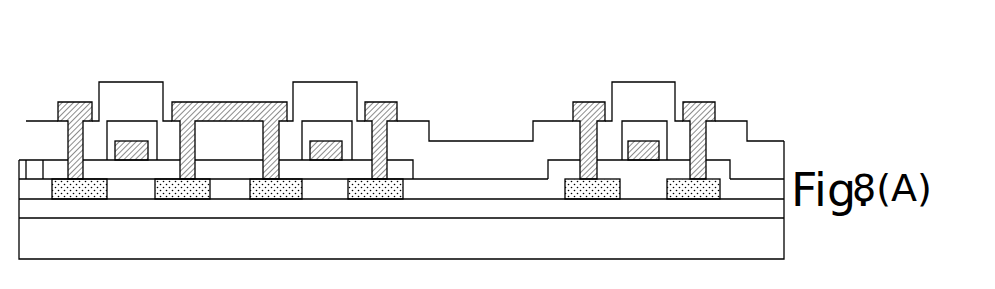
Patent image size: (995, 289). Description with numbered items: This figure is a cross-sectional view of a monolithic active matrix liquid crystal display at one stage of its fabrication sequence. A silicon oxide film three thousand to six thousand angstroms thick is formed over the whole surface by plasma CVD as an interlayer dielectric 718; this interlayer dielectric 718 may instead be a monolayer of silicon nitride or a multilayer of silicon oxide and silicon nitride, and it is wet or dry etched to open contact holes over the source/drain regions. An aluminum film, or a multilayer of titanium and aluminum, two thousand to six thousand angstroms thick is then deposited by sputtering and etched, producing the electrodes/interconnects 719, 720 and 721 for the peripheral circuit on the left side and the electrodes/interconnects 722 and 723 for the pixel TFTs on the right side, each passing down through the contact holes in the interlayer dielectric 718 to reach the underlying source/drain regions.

The interlayer dielectric 718 is at (500, 170).
The electrode/interconnect 719 is at (68, 113).
The electrode/interconnect 720 is at (193, 118).
The electrode/interconnect 721 is at (395, 105).
The electrode/interconnect 722 is at (590, 115).
The electrode/interconnect 723 is at (747, 53).